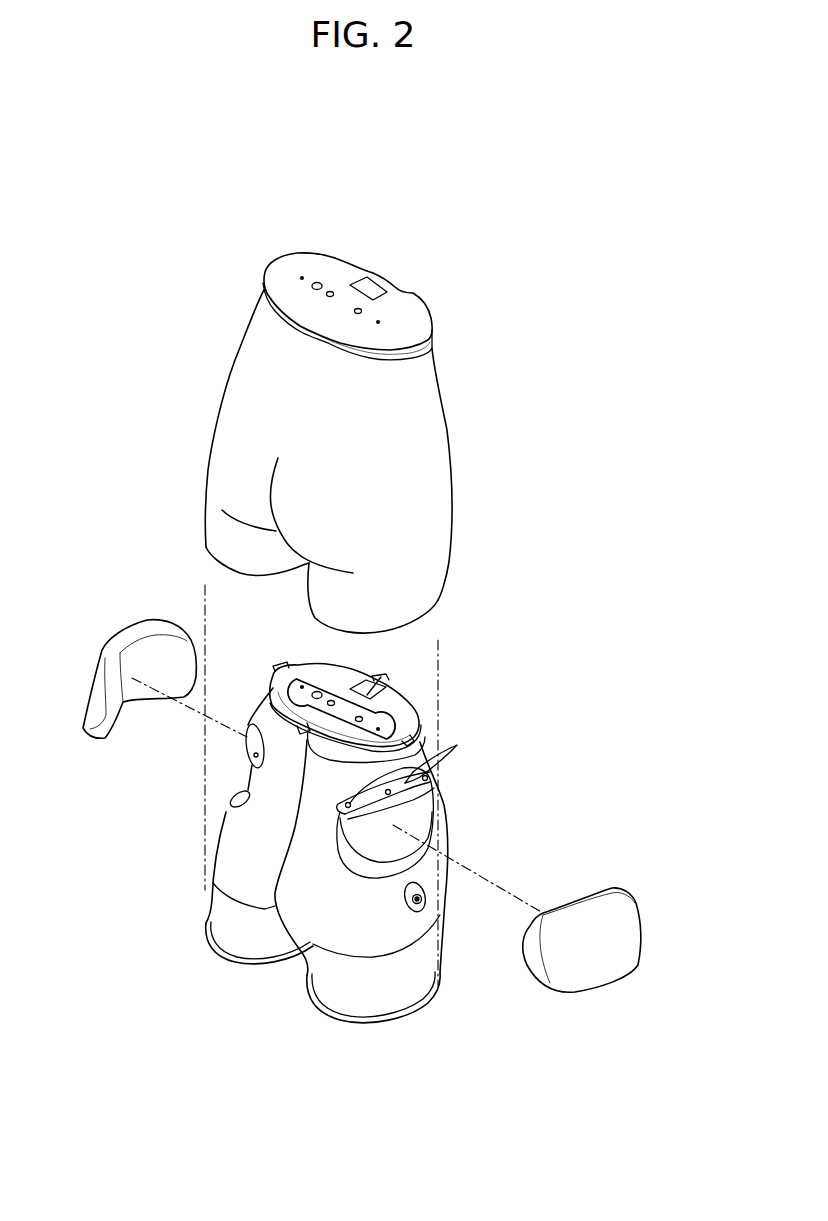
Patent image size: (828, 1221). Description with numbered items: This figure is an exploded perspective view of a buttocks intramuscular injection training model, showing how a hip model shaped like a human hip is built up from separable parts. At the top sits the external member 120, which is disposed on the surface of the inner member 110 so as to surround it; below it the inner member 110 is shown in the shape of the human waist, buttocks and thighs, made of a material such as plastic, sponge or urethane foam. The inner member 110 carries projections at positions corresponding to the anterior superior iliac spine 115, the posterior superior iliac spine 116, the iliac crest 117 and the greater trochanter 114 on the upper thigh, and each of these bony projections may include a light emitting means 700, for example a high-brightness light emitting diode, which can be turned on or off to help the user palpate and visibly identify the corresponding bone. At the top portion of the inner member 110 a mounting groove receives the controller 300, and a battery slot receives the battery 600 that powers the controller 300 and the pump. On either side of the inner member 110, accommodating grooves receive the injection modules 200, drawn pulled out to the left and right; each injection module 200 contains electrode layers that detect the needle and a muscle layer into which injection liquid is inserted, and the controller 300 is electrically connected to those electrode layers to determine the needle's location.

The inner member 110 is at (240, 972).
The greater trochanter 114 is at (423, 897).
The anterior superior iliac spine 115 is at (438, 782).
The posterior superior iliac spine 116 is at (435, 846).
The iliac crest 117 is at (433, 811).
The external member 120 is at (425, 401).
The injection module 200 is at (137, 632).
The controller 300 is at (400, 713).
The battery 600 is at (383, 678).
The light emitting means 700 is at (255, 756).